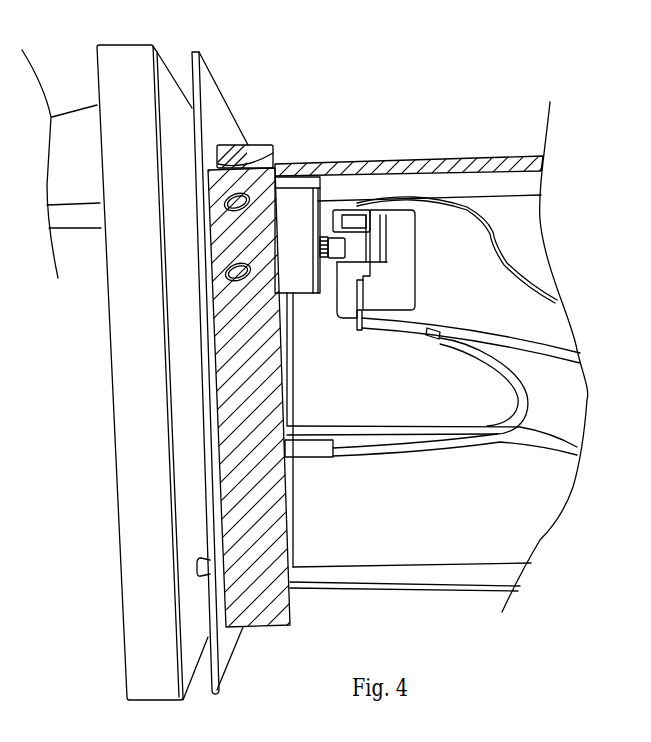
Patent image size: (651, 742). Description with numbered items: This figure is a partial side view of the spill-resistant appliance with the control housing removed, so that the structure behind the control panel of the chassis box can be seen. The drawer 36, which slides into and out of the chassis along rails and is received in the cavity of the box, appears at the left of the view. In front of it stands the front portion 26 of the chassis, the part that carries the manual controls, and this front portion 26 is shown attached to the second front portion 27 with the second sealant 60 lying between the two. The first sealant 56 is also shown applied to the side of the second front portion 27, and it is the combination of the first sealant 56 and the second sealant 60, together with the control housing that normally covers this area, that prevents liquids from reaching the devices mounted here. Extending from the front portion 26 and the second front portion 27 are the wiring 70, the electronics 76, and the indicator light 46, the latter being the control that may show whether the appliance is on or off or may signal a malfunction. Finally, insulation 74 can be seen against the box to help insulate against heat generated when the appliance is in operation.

The front portion 26 is at (214, 107).
The second front portion 27 is at (257, 147).
The drawer 36 is at (117, 410).
The indicator light 46 is at (300, 457).
The first sealant 56 is at (493, 163).
The second sealant 60 is at (230, 145).
The wiring 70 is at (513, 378).
The insulation 74 is at (427, 540).
The electronics 76 is at (403, 275).